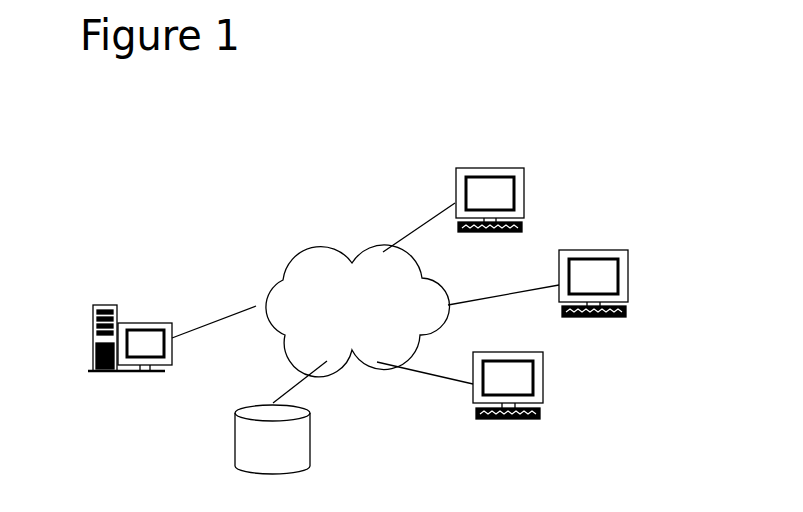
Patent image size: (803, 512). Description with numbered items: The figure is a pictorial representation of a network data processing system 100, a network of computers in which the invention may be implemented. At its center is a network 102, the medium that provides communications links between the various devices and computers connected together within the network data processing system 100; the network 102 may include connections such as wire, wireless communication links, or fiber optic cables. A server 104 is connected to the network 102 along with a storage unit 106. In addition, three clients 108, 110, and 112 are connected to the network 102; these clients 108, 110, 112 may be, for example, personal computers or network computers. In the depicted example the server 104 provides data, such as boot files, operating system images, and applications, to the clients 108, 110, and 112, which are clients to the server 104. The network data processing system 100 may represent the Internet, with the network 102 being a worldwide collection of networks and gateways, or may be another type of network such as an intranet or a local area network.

The network data processing system 100 is at (437, 414).
The network 102 is at (368, 304).
The server 104 is at (148, 322).
The storage unit 106 is at (310, 441).
The client 108 is at (470, 168).
The client 110 is at (597, 249).
The client 112 is at (545, 383).